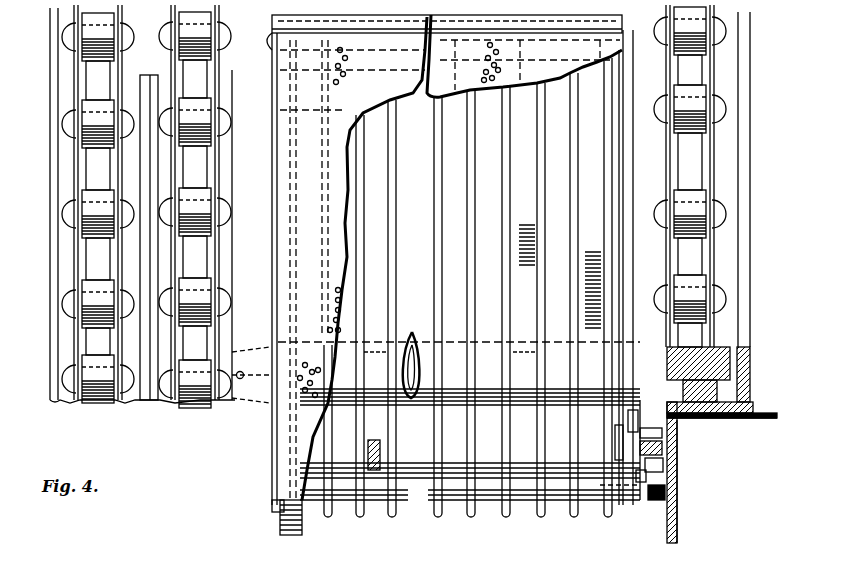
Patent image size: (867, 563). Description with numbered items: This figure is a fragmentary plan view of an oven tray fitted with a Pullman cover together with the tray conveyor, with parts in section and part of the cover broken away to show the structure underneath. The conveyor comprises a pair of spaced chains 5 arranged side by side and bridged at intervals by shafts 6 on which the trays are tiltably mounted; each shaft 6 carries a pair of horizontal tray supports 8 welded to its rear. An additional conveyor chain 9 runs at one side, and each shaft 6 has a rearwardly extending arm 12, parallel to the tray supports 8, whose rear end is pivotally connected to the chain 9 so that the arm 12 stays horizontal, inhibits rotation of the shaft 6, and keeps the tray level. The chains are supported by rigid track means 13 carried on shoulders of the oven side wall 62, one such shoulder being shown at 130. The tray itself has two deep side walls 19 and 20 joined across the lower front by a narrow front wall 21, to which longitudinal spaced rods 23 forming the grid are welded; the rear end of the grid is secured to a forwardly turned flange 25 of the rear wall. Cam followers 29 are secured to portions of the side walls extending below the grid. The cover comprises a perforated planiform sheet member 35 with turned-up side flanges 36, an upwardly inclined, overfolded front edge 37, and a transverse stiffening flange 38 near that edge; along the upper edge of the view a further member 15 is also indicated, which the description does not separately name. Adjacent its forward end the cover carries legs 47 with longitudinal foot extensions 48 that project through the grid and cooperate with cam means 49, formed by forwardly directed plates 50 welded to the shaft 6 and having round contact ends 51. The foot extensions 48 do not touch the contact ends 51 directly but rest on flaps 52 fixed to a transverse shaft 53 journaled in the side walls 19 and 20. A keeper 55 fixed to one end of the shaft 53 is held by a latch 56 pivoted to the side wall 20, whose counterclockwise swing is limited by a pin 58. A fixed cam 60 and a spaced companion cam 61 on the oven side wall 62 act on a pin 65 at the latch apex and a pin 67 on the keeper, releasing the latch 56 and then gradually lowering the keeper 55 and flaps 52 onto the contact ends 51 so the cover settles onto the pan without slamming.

The chains 5 is at (203, 100).
The shaft 6 is at (453, 343).
The tray supports 8 is at (533, 215).
The conveyor chain 9 is at (103, 103).
The arm 12 is at (153, 255).
The track means 13 is at (150, 405).
The top rail 15 is at (377, 16).
The side wall 19 is at (263, 276).
The side wall 20 is at (635, 285).
The front wall 21 is at (420, 490).
The rods 23 is at (603, 115).
The flange 25 is at (405, 100).
The cam followers 29 is at (272, 224).
The sheet member 35 is at (462, 98).
The side flanges 36 is at (276, 36).
The front edge 37 is at (285, 535).
The stiffening flange 38 is at (272, 503).
The legs 47 is at (275, 442).
The foot extensions 48 is at (295, 440).
The cam means 49 is at (379, 428).
The plates 50 is at (375, 378).
The contact ends 51 is at (380, 450).
The flaps 52 is at (342, 450).
The transverse shaft 53 is at (455, 470).
The keeper 55 is at (632, 490).
The latch 56 is at (663, 372).
The pin 58 is at (640, 482).
The cam 60 is at (662, 446).
The cam 61 is at (655, 500).
The side wall 62 is at (678, 515).
The pin 65 is at (662, 433).
The pin 67 is at (670, 478).
The shoulder 130 is at (752, 418).